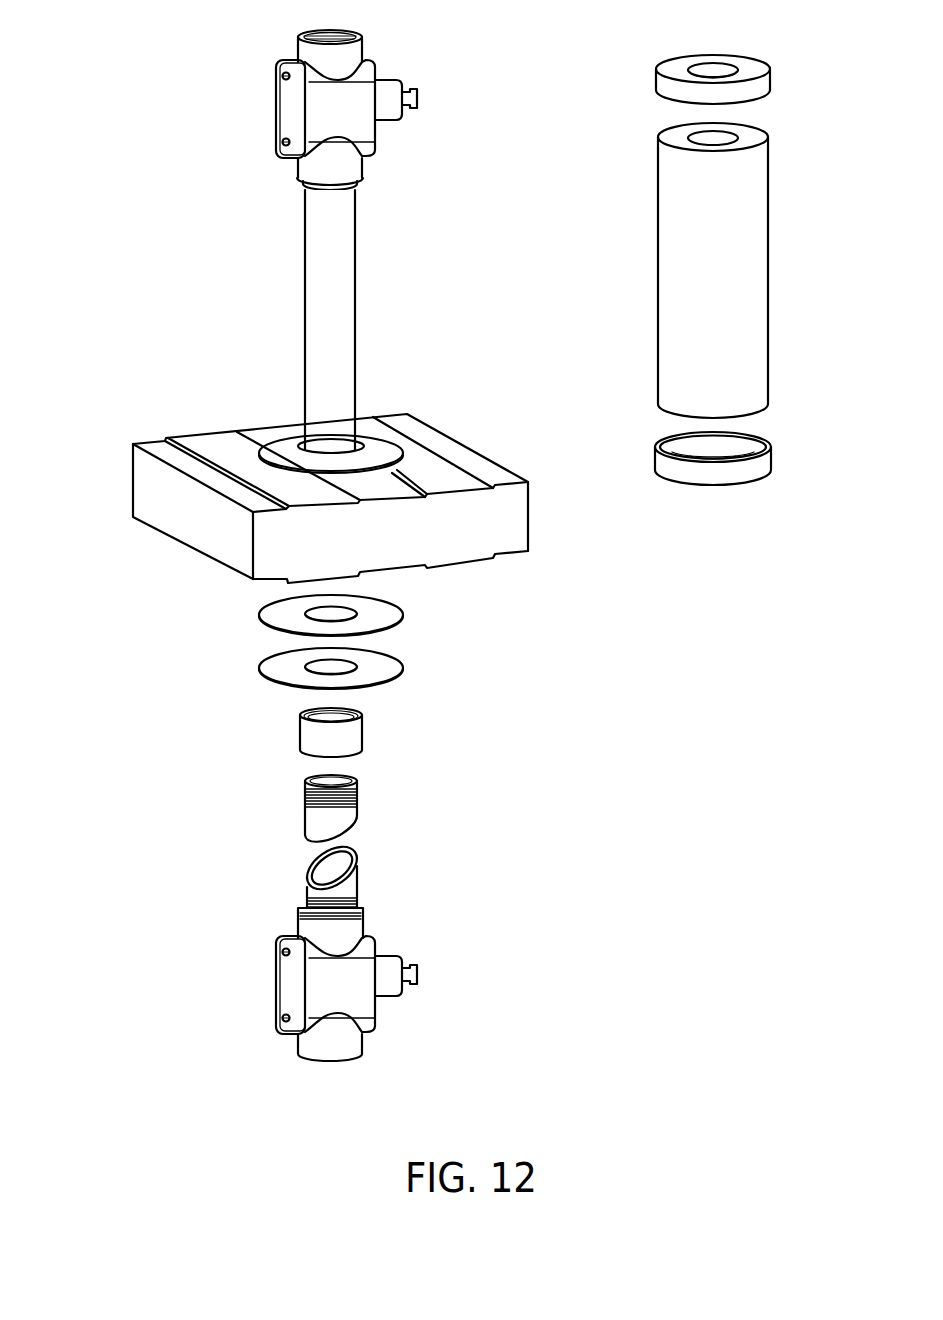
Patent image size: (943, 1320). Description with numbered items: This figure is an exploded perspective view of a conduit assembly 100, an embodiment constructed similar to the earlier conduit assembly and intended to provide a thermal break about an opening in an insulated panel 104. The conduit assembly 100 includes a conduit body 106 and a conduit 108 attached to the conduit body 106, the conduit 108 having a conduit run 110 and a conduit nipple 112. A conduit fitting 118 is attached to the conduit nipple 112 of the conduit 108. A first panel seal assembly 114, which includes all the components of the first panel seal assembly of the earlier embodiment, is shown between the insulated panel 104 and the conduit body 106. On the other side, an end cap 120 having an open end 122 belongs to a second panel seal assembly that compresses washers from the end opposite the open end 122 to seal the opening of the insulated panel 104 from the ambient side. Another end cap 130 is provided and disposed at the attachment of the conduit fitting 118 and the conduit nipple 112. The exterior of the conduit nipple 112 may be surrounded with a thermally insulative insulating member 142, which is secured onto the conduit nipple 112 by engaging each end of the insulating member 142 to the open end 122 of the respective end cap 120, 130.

The conduit assembly 100 is at (160, 77).
The insulated panel 104 is at (524, 509).
The conduit body 106 is at (364, 1006).
The conduit 108 is at (93, 320).
The conduit run 110 is at (352, 878).
The conduit nipple 112 is at (348, 277).
The first panel seal assembly 114 is at (443, 600).
The conduit fitting 118 is at (356, 47).
The end cap 120 is at (768, 466).
The open end 122 is at (751, 450).
The end cap 130 is at (753, 68).
The insulating member 142 is at (763, 227).